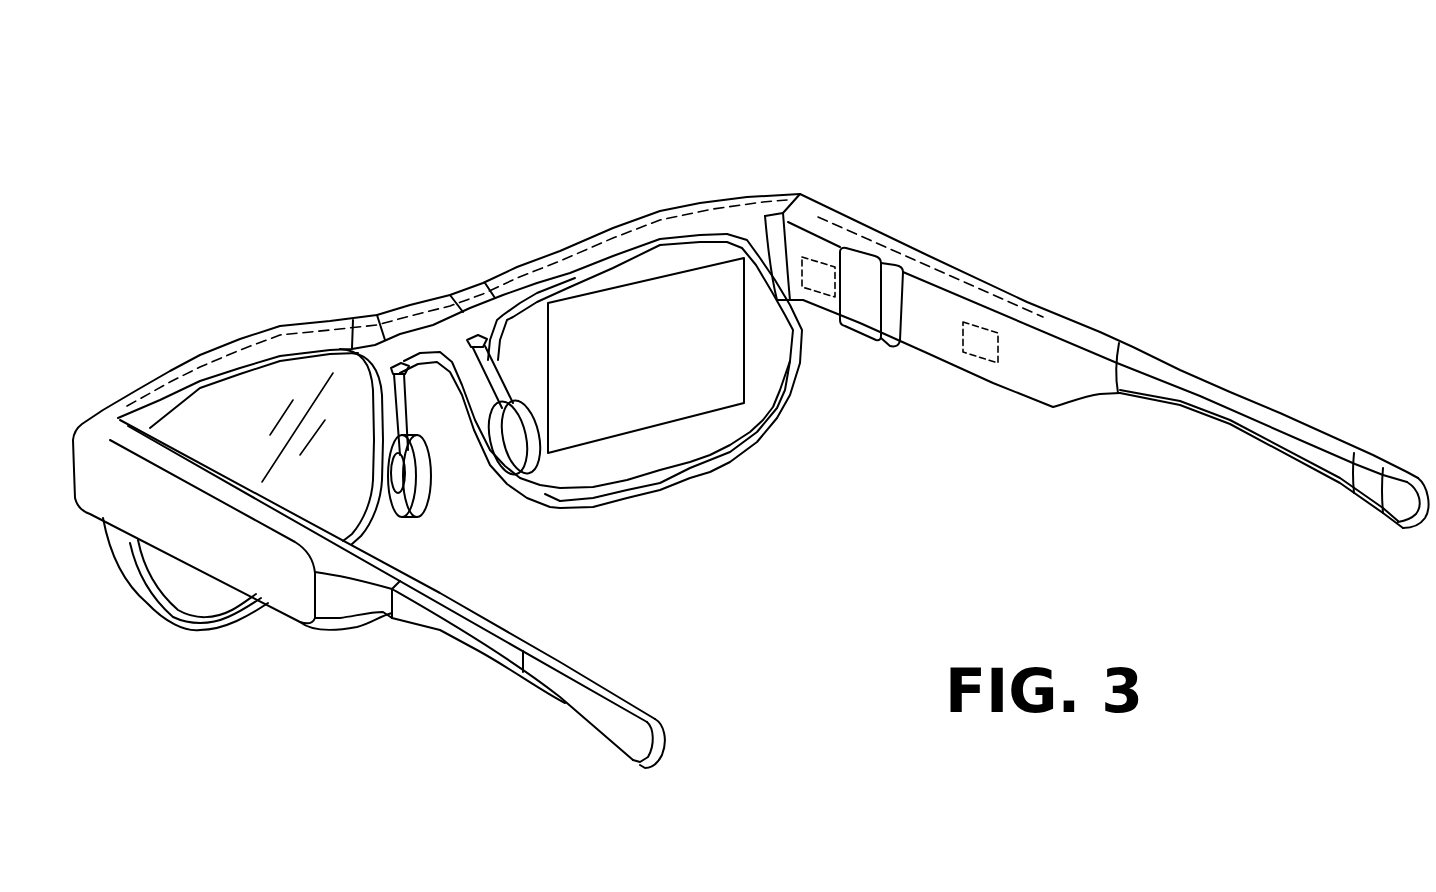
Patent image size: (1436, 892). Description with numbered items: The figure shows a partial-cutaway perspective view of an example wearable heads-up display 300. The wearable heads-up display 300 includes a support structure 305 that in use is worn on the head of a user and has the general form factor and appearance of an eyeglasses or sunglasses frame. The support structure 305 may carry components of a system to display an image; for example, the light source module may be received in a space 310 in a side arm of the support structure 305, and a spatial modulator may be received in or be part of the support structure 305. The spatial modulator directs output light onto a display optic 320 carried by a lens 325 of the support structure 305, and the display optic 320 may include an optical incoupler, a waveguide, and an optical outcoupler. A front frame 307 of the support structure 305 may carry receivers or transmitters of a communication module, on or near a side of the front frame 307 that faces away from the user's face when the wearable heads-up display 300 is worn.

The wearable heads-up display 300 is at (362, 167).
The support structure 305 is at (1055, 305).
The front frame 307 is at (423, 308).
The space 310 is at (810, 292).
The display optic 320 is at (648, 280).
The lens 325 is at (657, 457).